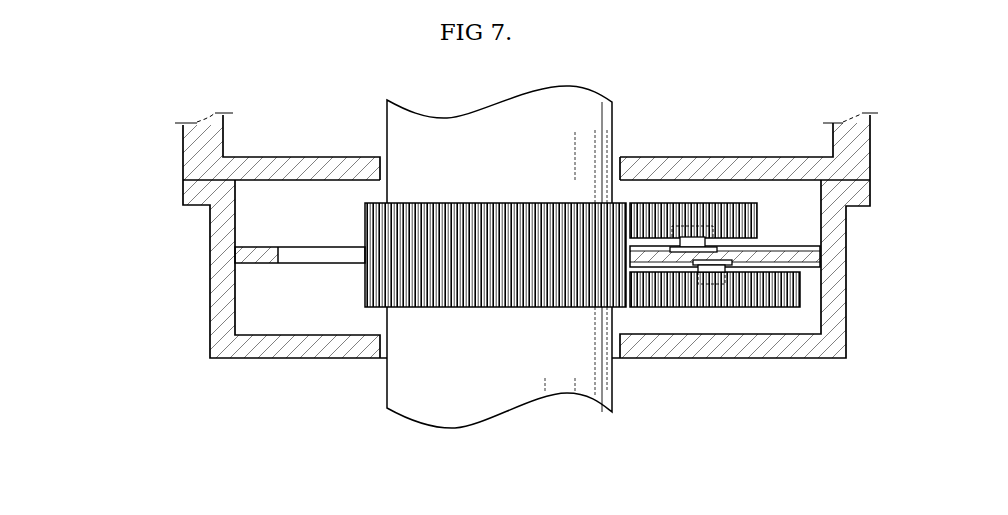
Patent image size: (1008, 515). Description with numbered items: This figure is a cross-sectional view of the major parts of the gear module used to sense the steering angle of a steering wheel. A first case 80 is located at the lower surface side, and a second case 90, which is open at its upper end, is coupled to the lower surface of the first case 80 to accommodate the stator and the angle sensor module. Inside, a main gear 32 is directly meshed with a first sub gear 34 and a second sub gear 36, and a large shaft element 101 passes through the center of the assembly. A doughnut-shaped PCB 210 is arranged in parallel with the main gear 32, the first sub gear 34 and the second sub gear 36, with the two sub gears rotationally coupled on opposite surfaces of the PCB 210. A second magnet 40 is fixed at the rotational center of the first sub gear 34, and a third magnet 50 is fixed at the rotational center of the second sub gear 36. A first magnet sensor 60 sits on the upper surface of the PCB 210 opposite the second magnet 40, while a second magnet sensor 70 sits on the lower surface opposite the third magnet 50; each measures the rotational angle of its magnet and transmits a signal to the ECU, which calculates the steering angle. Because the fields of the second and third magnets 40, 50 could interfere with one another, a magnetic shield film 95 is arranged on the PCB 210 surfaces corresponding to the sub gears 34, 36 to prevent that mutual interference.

The main gear 32 is at (372, 202).
The first sub gear 34 is at (655, 202).
The second sub gear 36 is at (643, 302).
The second magnet 40 is at (688, 225).
The third magnet 50 is at (727, 275).
The first magnet sensor 60 is at (753, 247).
The second magnet sensor 70 is at (745, 264).
The first case 80 is at (138, 171).
The second case 90 is at (156, 343).
The magnetic shield film 95 is at (810, 267).
The main shaft 101 is at (487, 403).
The PCB 210 is at (240, 253).